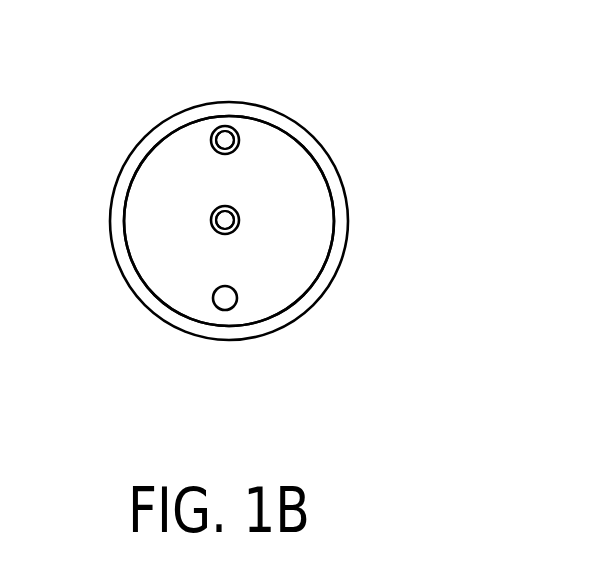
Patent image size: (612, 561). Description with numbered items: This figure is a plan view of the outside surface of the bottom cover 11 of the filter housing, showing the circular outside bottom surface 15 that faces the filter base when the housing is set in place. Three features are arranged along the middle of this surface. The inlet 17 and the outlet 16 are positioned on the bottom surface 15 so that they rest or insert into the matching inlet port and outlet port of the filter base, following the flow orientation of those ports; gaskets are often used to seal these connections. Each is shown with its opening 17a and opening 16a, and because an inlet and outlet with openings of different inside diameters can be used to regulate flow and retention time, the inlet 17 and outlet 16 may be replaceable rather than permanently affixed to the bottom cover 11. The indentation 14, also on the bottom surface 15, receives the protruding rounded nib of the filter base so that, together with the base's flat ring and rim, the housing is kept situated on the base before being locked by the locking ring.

The bottom cover 11 is at (162, 123).
The inlet 17 is at (238, 135).
The opening 17a is at (225, 140).
The outlet 16 is at (225, 220).
The opening 16a is at (225, 220).
The outside bottom surface 15 is at (147, 253).
The indentation 14 is at (225, 298).